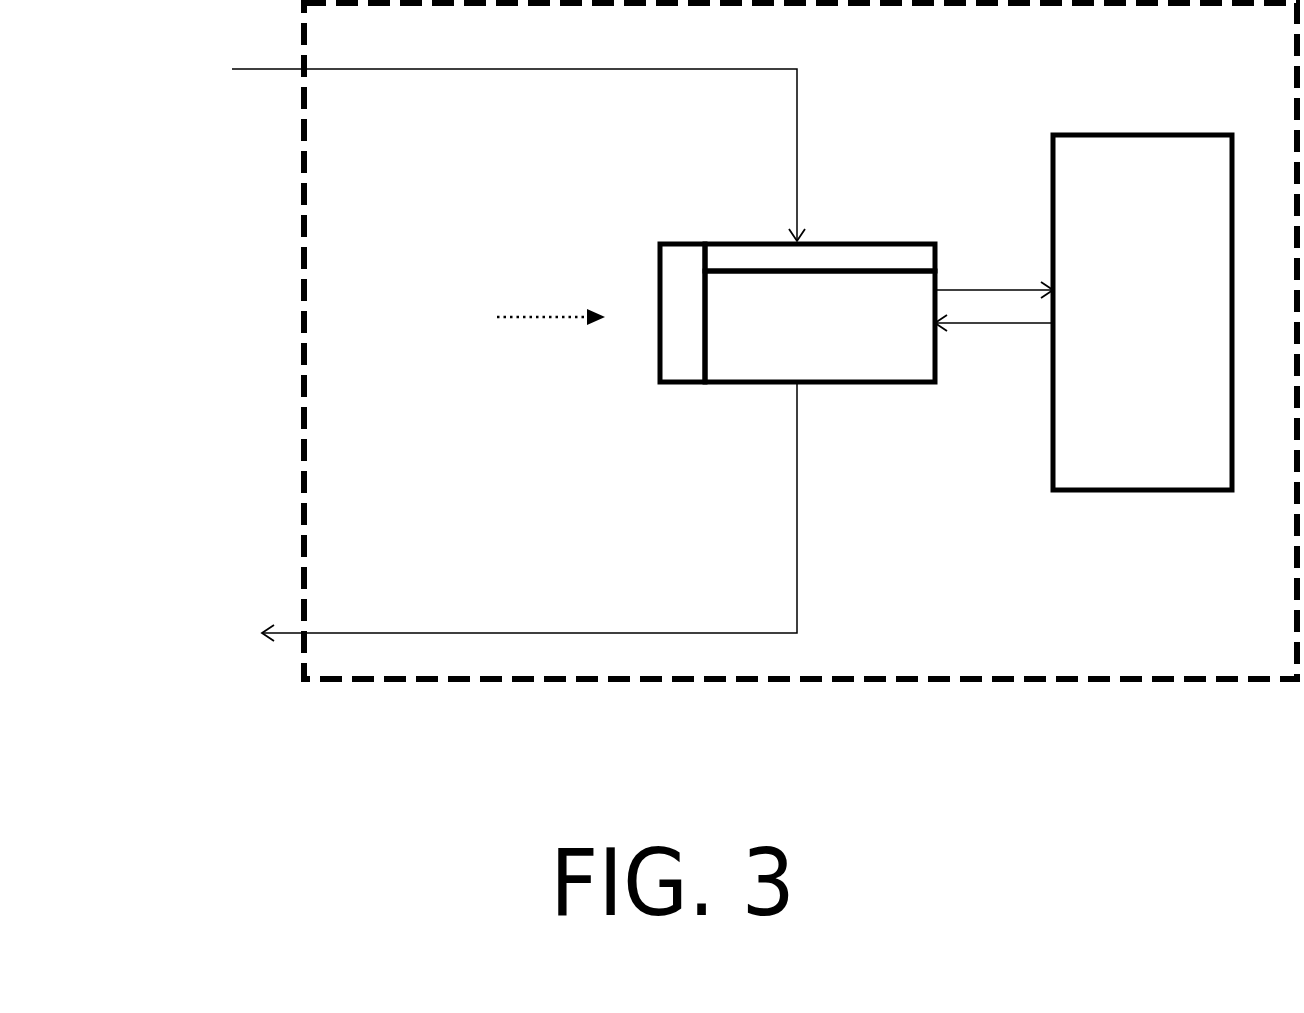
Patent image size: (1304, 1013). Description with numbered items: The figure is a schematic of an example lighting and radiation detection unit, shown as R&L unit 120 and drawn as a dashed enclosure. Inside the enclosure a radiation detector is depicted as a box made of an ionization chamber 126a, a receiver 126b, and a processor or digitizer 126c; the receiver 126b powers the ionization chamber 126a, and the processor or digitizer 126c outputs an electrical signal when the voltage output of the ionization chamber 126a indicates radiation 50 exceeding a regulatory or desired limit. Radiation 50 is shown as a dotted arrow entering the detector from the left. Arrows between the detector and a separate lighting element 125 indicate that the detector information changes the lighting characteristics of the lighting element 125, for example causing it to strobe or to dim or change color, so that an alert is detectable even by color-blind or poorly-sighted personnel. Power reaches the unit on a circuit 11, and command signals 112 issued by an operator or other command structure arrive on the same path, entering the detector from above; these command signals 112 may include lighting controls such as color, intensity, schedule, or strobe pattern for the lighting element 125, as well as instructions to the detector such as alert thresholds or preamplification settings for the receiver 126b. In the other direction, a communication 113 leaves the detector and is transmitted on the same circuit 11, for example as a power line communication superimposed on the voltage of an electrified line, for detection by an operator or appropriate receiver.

The command signals 112 is at (437, 146).
The circuit 11 is at (262, 69).
The communication 113 is at (262, 633).
The radiation 50 is at (548, 310).
The R&L unit 120 is at (1185, 683).
The lighting element 125 is at (1125, 133).
The ionization chamber 126a is at (690, 385).
The receiver 126b is at (878, 242).
The processor or digitizer 126c is at (870, 385).